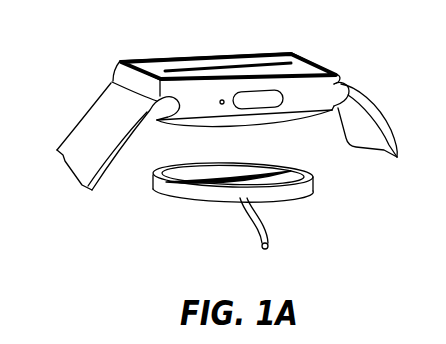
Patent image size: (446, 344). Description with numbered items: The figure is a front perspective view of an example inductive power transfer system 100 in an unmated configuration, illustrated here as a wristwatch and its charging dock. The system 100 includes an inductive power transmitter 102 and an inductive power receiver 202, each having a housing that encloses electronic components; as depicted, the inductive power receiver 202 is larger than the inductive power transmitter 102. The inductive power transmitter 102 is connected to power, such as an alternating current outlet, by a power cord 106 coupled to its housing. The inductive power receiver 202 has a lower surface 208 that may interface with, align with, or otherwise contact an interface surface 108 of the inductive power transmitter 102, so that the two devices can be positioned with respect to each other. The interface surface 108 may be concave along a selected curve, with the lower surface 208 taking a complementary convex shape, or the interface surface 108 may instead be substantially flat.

The inductive power transfer system 100 is at (86, 42).
The inductive power receiver 202 is at (109, 82).
The lower surface 208 is at (286, 126).
The inductive power transmitter 102 is at (283, 203).
The interface surface 108 is at (286, 166).
The power cord 106 is at (261, 247).